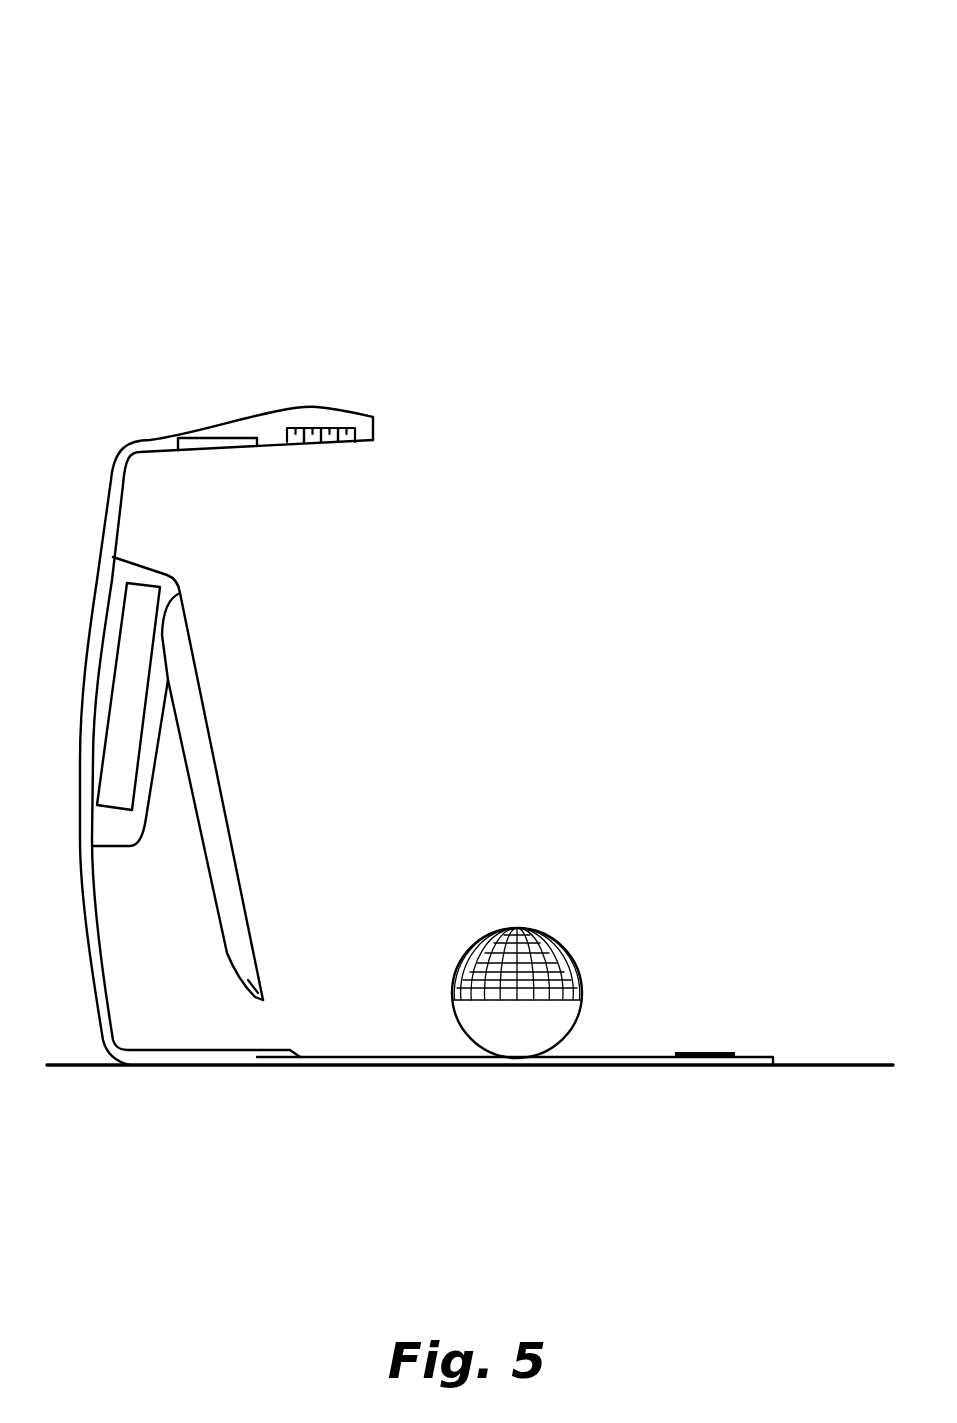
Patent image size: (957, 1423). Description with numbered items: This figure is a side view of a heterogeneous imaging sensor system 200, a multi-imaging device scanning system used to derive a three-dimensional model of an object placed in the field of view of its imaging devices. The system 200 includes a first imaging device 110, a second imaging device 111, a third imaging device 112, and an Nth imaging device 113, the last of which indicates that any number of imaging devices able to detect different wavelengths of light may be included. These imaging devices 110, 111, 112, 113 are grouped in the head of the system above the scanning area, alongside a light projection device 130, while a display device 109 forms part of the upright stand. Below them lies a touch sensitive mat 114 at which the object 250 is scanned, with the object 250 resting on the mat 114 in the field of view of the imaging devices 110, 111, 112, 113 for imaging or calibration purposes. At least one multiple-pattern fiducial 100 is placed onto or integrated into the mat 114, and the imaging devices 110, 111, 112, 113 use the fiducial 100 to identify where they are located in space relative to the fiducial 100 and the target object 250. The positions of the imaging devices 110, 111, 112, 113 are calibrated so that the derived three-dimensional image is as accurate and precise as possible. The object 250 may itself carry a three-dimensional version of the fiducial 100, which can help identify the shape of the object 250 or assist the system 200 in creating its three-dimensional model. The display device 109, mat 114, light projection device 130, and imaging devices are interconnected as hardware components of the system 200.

The heterogeneous imaging sensor system 200 is at (136, 74).
The multiple-pattern fiducial 100 is at (573, 961).
The display device 109 is at (252, 988).
The first imaging device 110 is at (293, 428).
The second imaging device 111 is at (312, 428).
The third imaging device 112 is at (328, 428).
The Nth imaging device 113 is at (347, 427).
The touch sensitive mat 114 is at (633, 1062).
The light projection device 130 is at (220, 438).
The object 250 is at (512, 1042).